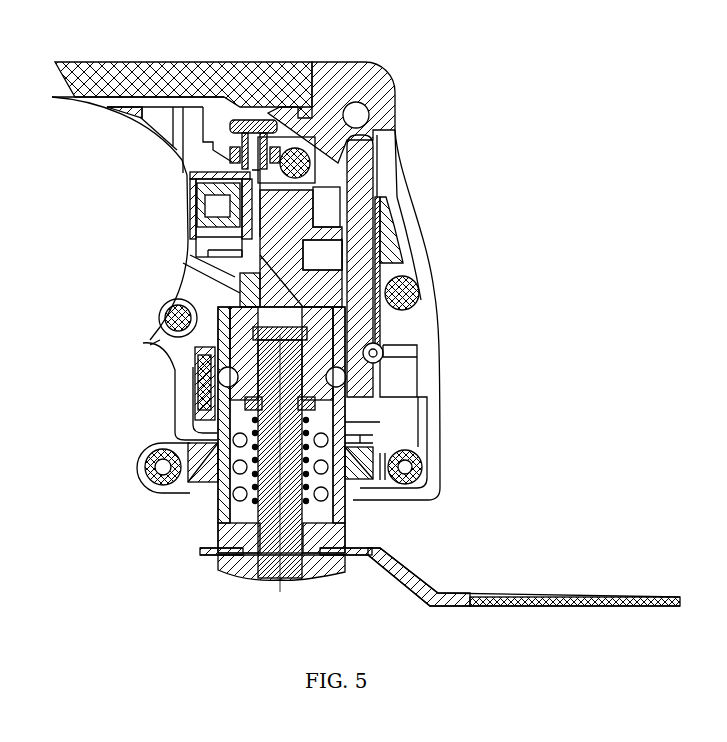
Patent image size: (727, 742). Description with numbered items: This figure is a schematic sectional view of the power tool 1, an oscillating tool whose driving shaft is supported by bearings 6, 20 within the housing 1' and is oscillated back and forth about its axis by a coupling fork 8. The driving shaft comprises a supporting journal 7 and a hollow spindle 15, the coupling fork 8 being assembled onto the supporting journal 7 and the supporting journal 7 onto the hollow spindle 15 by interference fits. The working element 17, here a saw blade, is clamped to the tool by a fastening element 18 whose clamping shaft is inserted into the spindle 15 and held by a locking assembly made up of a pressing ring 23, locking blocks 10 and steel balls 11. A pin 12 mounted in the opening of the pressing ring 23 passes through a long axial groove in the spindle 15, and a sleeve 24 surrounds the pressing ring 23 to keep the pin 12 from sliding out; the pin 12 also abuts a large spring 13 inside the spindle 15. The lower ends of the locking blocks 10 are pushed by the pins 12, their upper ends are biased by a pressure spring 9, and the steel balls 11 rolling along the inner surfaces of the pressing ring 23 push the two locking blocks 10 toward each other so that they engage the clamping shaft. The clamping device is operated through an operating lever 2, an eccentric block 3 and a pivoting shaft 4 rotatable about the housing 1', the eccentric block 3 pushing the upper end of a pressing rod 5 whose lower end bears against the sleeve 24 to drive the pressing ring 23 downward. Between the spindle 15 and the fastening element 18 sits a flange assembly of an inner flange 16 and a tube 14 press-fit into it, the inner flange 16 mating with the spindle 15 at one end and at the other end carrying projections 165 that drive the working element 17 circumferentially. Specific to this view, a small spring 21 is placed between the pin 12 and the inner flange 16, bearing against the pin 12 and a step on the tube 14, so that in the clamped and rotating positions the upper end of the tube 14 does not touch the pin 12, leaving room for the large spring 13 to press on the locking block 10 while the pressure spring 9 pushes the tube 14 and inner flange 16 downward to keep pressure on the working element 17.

The power tool 1 is at (142, 218).
The housing 1' is at (141, 226).
The operating lever 2 is at (245, 100).
The eccentric block 3 is at (372, 95).
The pivoting shaft 4 is at (388, 123).
The pressing rod 5 is at (362, 205).
The bearing 6 is at (386, 239).
The supporting journal 7 is at (412, 278).
The coupling fork 8 is at (408, 306).
The pressure spring 9 is at (386, 353).
The locking block 10 is at (392, 370).
The steel ball 11 is at (374, 390).
The pin 12 is at (346, 416).
The large spring 13 is at (348, 446).
The tube 14 is at (414, 468).
The hollow spindle 15 is at (344, 500).
The inner flange 16 is at (347, 536).
The working element 17 is at (408, 576).
The fastening element 18 is at (245, 572).
The bearing 20 is at (143, 466).
The small spring 21 is at (225, 486).
The pressing ring 23 is at (178, 377).
The sleeve 24 is at (197, 352).
The projections 165 is at (253, 577).